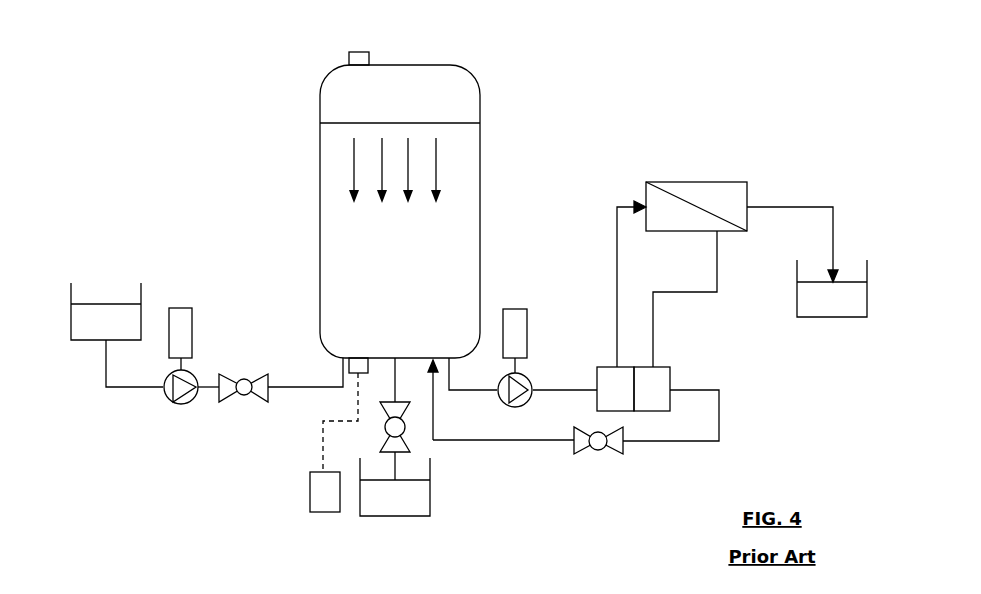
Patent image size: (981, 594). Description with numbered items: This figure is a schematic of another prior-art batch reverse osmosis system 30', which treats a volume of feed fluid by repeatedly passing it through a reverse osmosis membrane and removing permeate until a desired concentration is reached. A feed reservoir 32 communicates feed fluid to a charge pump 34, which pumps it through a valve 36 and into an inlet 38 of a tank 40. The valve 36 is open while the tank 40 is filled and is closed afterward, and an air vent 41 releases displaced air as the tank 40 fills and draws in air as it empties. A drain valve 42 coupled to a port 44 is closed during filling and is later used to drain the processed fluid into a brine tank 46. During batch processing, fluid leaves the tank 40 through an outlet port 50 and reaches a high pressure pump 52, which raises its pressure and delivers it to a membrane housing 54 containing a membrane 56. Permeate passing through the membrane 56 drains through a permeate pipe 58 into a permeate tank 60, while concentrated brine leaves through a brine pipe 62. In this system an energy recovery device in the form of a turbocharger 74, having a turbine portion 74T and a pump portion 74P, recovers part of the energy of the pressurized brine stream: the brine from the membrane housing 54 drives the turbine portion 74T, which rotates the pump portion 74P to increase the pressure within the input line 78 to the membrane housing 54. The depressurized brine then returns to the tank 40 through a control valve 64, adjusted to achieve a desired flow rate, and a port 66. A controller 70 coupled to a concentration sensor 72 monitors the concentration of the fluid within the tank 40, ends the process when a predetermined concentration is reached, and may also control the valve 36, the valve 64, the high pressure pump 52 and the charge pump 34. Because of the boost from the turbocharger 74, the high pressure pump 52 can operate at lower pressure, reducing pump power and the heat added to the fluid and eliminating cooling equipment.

The prior reverse osmosis system 30' is at (130, 106).
The feed reservoir 32 is at (71, 320).
The charge pump 34 is at (182, 405).
The valve 36 is at (244, 378).
The inlet 38 is at (335, 374).
The tank 40 is at (320, 222).
The air vent 41 is at (360, 52).
The drain valve 42 is at (400, 430).
The port 44 is at (395, 398).
The brine tank 46 is at (430, 490).
The outlet port 50 is at (450, 376).
The high pressure pump 52 is at (527, 330).
The membrane housing 54 is at (731, 182).
The membrane 56 is at (688, 202).
The permeate pipe 58 is at (810, 207).
The permeate tank 60 is at (847, 317).
The brine pipe 62 is at (717, 255).
The valve 64 is at (598, 450).
The port 66 is at (433, 415).
The controller 70 is at (310, 490).
The concentration sensor 72 is at (349, 362).
The turbocharger 74 is at (670, 375).
The pump portion 74P is at (603, 367).
The turbine portion 74T is at (662, 367).
The input line 78 is at (628, 205).